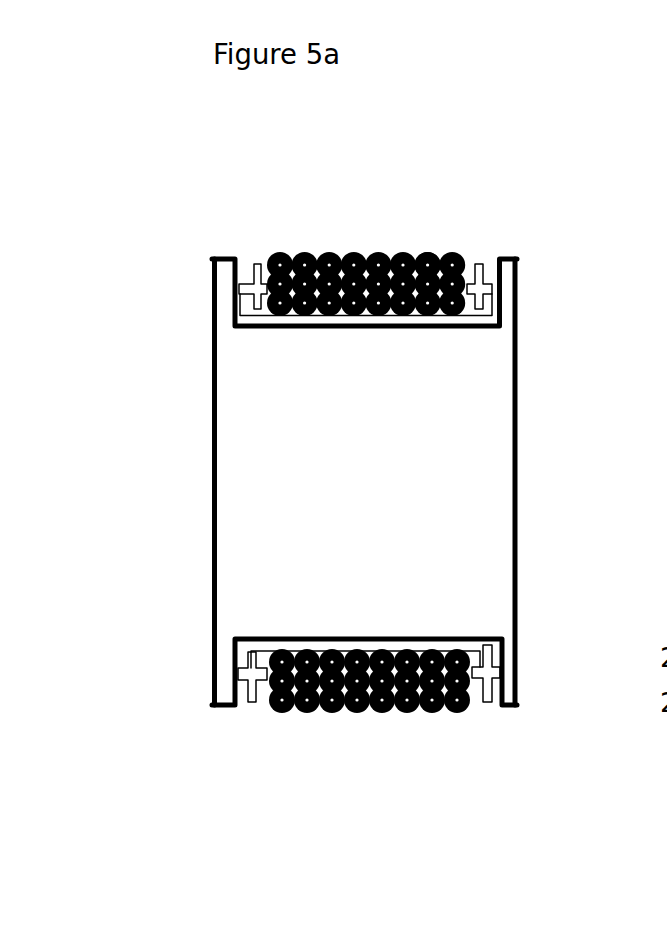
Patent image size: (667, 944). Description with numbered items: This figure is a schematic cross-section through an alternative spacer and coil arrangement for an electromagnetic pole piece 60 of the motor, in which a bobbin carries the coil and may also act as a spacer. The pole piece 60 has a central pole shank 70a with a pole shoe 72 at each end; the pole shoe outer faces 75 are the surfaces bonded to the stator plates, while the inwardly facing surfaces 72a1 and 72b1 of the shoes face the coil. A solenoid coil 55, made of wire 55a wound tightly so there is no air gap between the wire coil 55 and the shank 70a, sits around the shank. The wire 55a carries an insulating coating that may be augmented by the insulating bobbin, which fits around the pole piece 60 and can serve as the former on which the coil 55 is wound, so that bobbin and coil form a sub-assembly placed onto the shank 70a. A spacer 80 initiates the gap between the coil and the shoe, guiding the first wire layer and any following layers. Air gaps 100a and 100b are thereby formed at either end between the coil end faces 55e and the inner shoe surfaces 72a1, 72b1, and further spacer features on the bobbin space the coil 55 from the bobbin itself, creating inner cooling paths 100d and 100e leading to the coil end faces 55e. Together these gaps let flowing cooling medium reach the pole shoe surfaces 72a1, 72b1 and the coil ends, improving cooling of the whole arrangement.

The solenoid coil 55 is at (367, 257).
The wire 55a is at (433, 252).
The coil end face 55e is at (266, 258).
The pole piece 60 is at (342, 572).
The pole shank 70a is at (327, 333).
The pole shoe 72 is at (511, 298).
The inwardly facing surface 72a1 is at (226, 266).
The inwardly facing surface 72b1 is at (517, 260).
The pole shoe outer face 75 is at (211, 543).
The spacer 80 is at (490, 693).
The air gap 100a is at (248, 262).
The air gap 100b is at (493, 260).
The inner cooling path 100d is at (259, 686).
The inner cooling path 100e is at (470, 713).